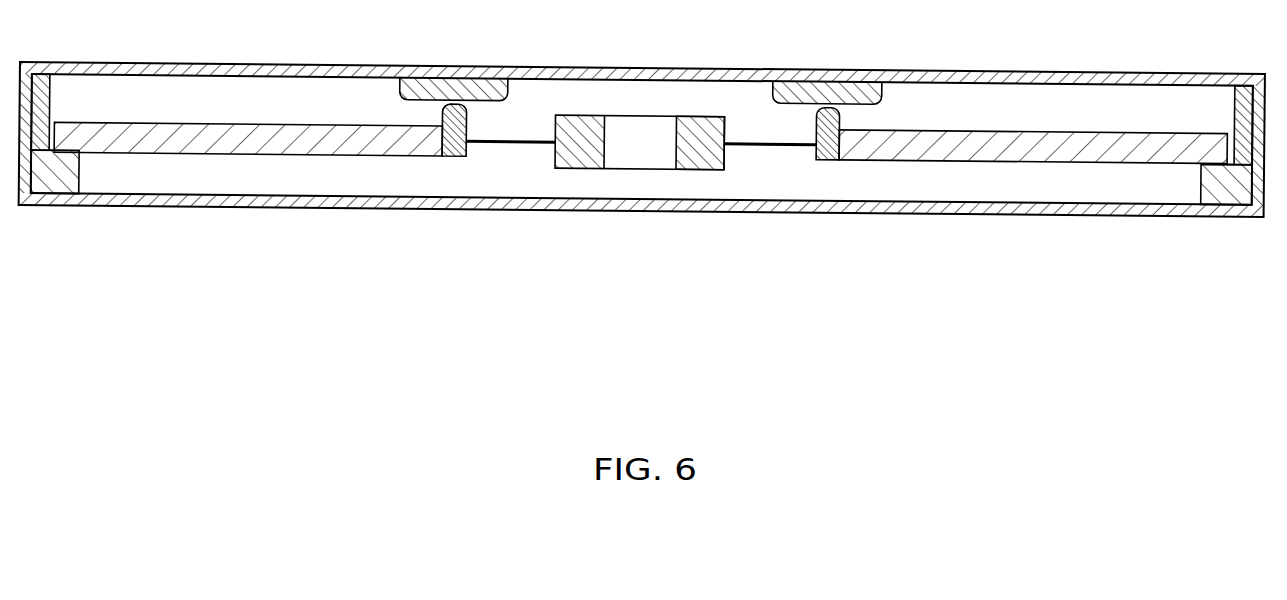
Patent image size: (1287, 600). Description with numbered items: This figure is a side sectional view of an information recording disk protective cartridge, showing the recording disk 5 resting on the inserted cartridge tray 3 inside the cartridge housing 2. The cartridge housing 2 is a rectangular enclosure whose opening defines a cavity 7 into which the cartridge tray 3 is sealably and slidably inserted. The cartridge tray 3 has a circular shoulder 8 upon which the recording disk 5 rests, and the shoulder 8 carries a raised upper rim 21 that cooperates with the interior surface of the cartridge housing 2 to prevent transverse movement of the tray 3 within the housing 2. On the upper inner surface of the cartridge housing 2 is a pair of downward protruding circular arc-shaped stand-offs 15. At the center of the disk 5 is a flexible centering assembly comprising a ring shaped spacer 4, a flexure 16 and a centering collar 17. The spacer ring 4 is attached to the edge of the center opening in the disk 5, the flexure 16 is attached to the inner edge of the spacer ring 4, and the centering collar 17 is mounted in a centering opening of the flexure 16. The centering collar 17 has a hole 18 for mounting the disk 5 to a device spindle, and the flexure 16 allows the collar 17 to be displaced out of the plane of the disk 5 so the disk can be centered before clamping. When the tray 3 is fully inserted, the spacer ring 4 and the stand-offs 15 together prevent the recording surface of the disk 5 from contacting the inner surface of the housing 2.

The cartridge housing 2 is at (1000, 62).
The cartridge tray 3 is at (72, 188).
The spacer ring 4 is at (840, 107).
The recording disk 5 is at (245, 120).
The cavity 7 is at (950, 111).
The circular shoulder 8 is at (80, 155).
The stand-offs 15 is at (508, 86).
The flexure 16 is at (772, 139).
The centering collar 17 is at (722, 143).
The hole 18 is at (633, 149).
The raised upper rim 21 is at (50, 100).